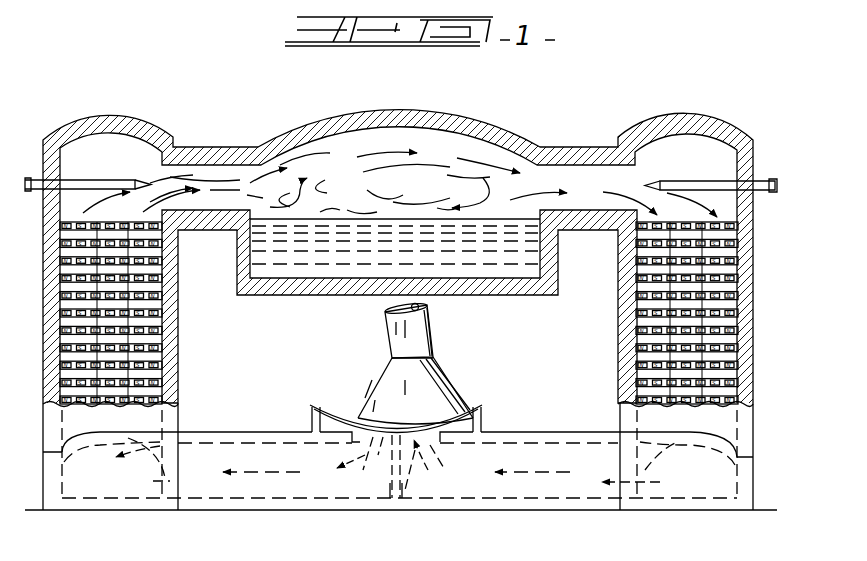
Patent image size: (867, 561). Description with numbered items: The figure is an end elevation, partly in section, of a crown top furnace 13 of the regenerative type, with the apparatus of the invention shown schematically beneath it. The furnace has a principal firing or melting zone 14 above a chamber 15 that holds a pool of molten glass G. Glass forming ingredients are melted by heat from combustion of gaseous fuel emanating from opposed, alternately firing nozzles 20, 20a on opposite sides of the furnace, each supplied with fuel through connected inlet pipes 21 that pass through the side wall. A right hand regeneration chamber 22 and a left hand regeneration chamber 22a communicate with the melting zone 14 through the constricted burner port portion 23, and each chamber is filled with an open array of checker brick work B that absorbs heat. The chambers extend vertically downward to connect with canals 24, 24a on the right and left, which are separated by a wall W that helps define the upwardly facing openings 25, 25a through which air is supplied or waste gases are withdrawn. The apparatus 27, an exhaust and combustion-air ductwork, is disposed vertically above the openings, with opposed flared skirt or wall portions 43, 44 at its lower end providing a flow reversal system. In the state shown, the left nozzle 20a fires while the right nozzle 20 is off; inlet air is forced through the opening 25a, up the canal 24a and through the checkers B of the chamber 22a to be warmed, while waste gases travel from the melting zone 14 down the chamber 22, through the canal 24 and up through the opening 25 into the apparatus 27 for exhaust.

The crown top furnace 13 is at (513, 76).
The melting zone 14 is at (320, 147).
The right hand regeneration chamber 22 is at (710, 92).
The left hand regeneration chamber 22a is at (143, 89).
The constricted burner port portion 23 is at (227, 121).
The inlet pipes 21 is at (28, 179).
The right hand nozzle 20 is at (655, 184).
The left hand nozzle 20a is at (150, 183).
The brick work B is at (143, 320).
The chamber 15 is at (327, 289).
The molten glass G is at (507, 260).
The apparatus 27 is at (439, 334).
The flared skirt portion 43 is at (453, 387).
The flared skirt portion 44 is at (380, 383).
The right canal 24 is at (680, 492).
The left canal 24a is at (105, 485).
The upwardly facing opening 25 is at (420, 441).
The upwardly facing opening 25a is at (392, 446).
The wall W is at (408, 488).